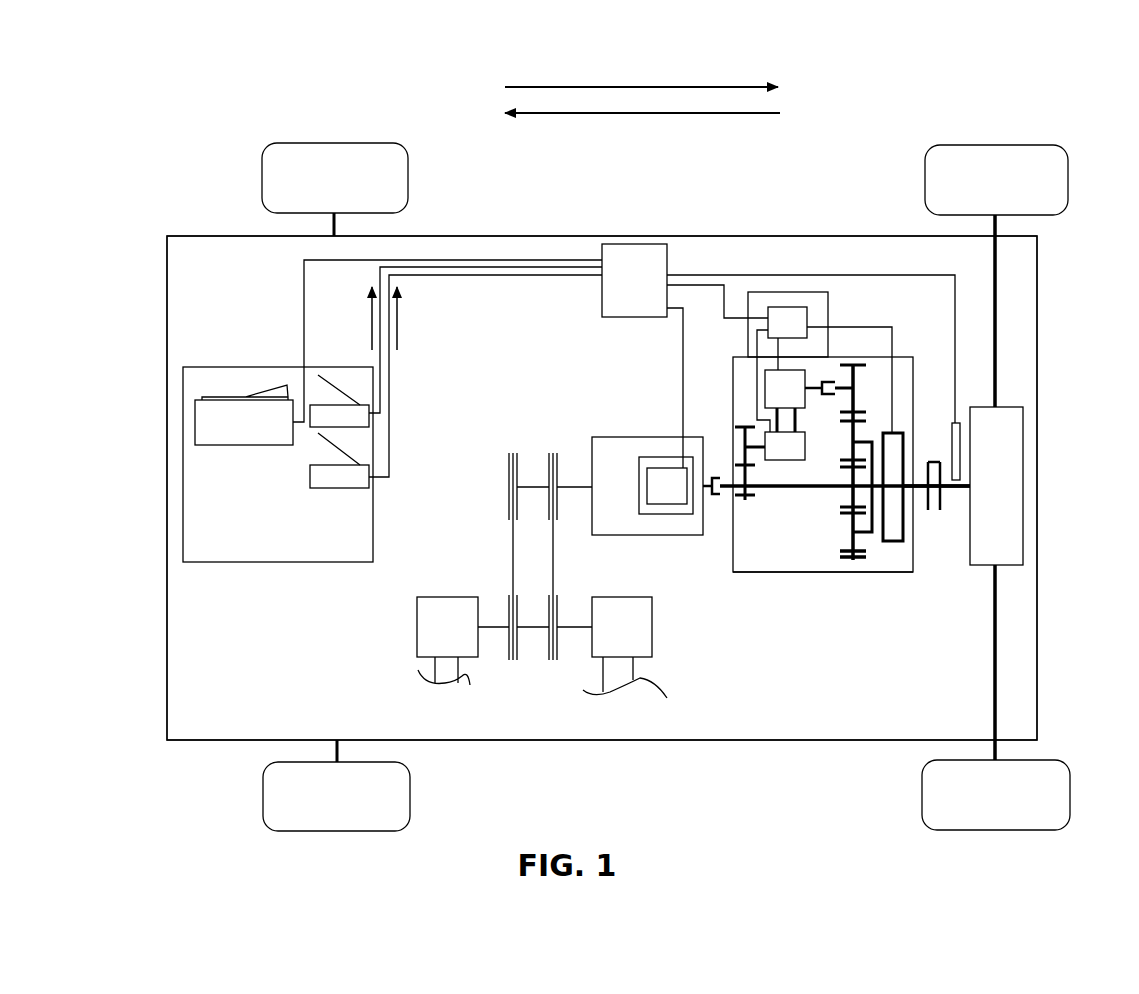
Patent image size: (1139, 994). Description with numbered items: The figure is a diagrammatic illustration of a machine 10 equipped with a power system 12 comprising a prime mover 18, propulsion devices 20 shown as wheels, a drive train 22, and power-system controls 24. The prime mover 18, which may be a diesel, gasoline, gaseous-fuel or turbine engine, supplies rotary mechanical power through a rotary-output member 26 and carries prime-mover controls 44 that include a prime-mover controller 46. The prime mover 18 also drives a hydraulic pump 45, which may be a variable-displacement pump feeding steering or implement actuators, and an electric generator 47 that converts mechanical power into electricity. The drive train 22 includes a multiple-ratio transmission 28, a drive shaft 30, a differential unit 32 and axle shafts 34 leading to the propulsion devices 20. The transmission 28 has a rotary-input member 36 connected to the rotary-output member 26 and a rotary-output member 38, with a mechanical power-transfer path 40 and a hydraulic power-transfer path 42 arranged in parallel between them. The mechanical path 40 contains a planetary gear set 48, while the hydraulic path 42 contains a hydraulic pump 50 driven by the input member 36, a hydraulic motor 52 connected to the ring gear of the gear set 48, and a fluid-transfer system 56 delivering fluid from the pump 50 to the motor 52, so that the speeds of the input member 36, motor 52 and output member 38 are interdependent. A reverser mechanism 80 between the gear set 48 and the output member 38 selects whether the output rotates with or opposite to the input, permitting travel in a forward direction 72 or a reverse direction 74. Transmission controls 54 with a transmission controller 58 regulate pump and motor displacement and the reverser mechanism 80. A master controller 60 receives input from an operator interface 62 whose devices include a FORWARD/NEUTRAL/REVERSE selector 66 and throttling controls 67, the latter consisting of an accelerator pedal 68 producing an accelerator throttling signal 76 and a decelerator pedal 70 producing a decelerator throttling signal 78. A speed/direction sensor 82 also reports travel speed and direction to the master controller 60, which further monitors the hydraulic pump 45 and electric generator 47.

The machine 10 is at (910, 93).
The power system 12 is at (705, 682).
The prime mover 18 is at (612, 437).
The propulsion devices 20 is at (1025, 145).
The drive train 22 is at (812, 617).
The power-system controls 24 is at (297, 380).
The rotary-output member 26 is at (705, 493).
The multiple-ratio transmission 28 is at (880, 572).
The drive shaft 30 is at (938, 512).
The differential unit 32 is at (996, 486).
The axle shafts 34 is at (993, 262).
The rotary-input member 36 is at (725, 495).
The rotary-output member 38 is at (913, 492).
The mechanical power-transfer path 40 is at (830, 513).
The hydraulic power-transfer path 42 is at (743, 393).
The prime-mover controls 44 is at (690, 515).
The hydraulic pump 45 is at (447, 641).
The prime-mover controller 46 is at (667, 486).
The electric generator 47 is at (625, 647).
The planetary gear set 48 is at (853, 565).
The hydraulic pump 50 is at (775, 446).
The hydraulic motor 52 is at (809, 401).
The transmission controls 54 is at (826, 292).
The fluid-transfer system 56 is at (810, 419).
The transmission controller 58 is at (782, 369).
The master controller 60 is at (685, 356).
The operator interface 62 is at (240, 562).
The FORWARD/NEUTRAL/REVERSE selector 66 is at (222, 445).
The throttling controls 67 is at (333, 510).
The accelerator pedal 68 is at (312, 428).
The decelerator pedal 70 is at (310, 477).
The forward direction 72 is at (593, 113).
The reverse direction 74 is at (682, 87).
The accelerator throttling signal 76 is at (370, 317).
The decelerator throttling signal 78 is at (400, 302).
The reverser mechanism 80 is at (898, 433).
The speed/direction sensor 82 is at (945, 426).